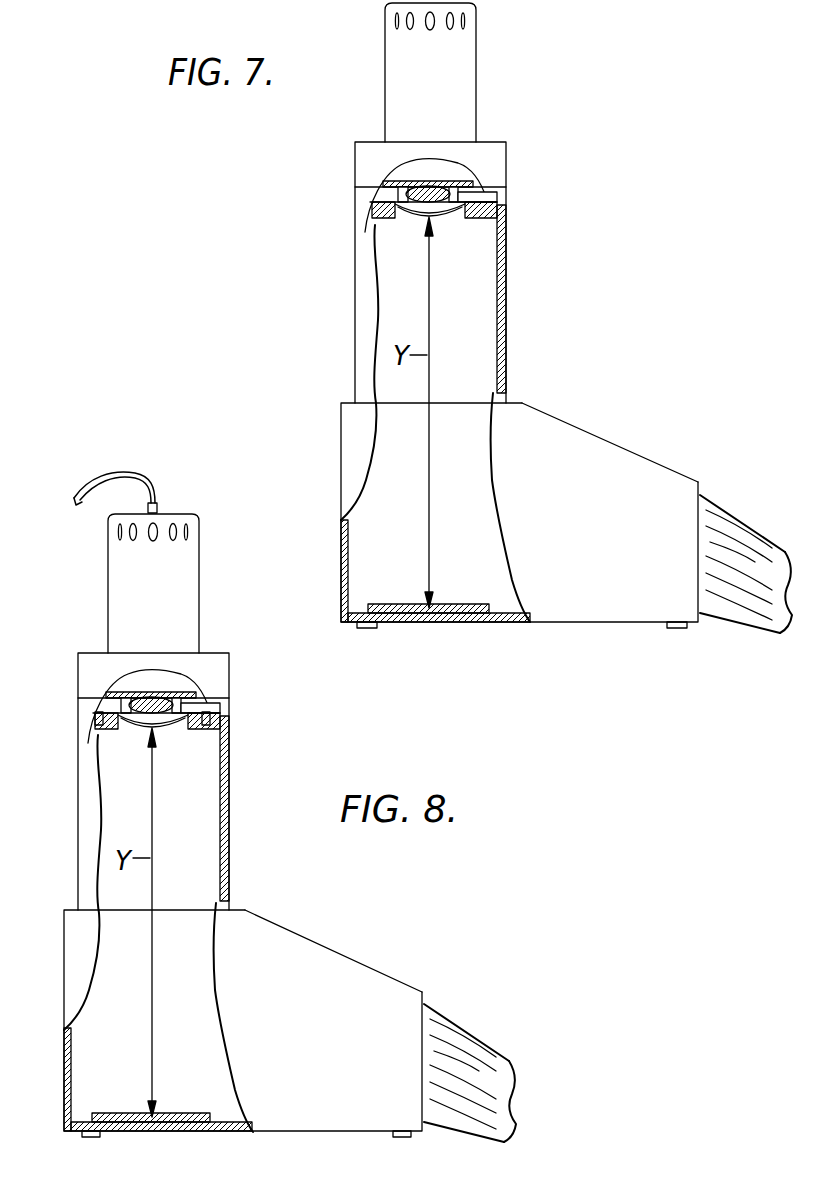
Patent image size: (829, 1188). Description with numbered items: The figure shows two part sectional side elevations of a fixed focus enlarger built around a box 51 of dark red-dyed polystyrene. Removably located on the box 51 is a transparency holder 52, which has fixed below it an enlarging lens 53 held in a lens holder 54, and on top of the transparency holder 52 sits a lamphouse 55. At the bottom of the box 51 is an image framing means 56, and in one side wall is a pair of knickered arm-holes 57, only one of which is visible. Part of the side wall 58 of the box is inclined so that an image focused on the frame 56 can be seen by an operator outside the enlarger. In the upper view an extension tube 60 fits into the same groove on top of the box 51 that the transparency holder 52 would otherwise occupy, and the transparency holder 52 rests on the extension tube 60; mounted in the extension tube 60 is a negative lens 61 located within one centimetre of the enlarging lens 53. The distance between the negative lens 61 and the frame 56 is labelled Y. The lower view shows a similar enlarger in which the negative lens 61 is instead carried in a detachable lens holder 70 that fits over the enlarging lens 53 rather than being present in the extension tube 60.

In FIG. 7, the box 51 is at (355, 418).
In FIG. 8, the box 51 is at (85, 925).
In FIG. 7, the transparency holder 52 is at (490, 153).
In FIG. 8, the transparency holder 52 is at (180, 663).
In FIG. 7, the enlarging lens 53 is at (420, 185).
In FIG. 8, the enlarging lens 53 is at (147, 699).
In FIG. 7, the lens holder 54 is at (458, 193).
In FIG. 8, the lens holder 54 is at (156, 710).
In FIG. 7, the lamphouse 55 is at (463, 68).
In FIG. 8, the lamphouse 55 is at (183, 571).
In FIG. 7, the image framing means 56 is at (448, 578).
In FIG. 8, the image framing means 56 is at (170, 1113).
In FIG. 7, the knickered arm-holes 57 is at (718, 527).
In FIG. 8, the knickered arm-holes 57 is at (455, 1040).
In FIG. 7, the side wall 58 is at (570, 423).
In FIG. 8, the side wall 58 is at (280, 928).
In FIG. 7, the extension tube 60 is at (503, 253).
In FIG. 7, the negative lens 61 is at (410, 222).
In FIG. 8, the negative lens 61 is at (140, 727).
In FIG. 8, the detachable lens holder 70 is at (212, 748).